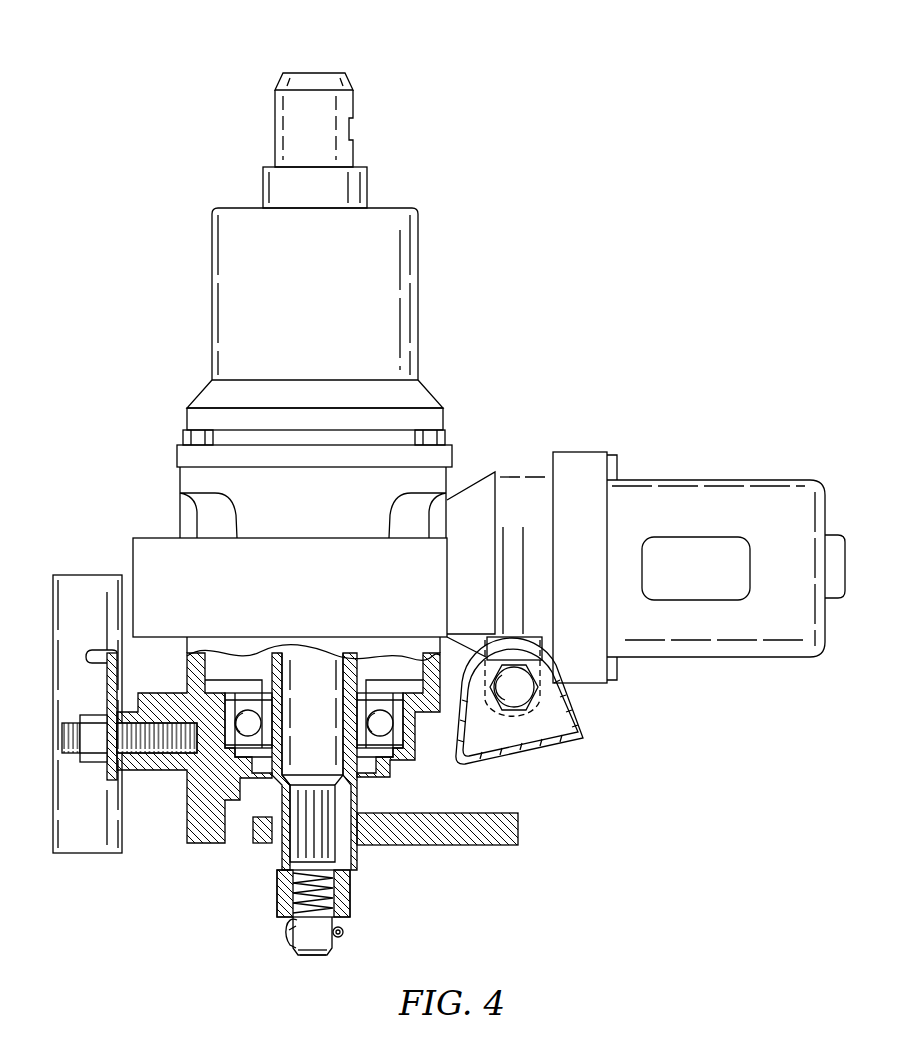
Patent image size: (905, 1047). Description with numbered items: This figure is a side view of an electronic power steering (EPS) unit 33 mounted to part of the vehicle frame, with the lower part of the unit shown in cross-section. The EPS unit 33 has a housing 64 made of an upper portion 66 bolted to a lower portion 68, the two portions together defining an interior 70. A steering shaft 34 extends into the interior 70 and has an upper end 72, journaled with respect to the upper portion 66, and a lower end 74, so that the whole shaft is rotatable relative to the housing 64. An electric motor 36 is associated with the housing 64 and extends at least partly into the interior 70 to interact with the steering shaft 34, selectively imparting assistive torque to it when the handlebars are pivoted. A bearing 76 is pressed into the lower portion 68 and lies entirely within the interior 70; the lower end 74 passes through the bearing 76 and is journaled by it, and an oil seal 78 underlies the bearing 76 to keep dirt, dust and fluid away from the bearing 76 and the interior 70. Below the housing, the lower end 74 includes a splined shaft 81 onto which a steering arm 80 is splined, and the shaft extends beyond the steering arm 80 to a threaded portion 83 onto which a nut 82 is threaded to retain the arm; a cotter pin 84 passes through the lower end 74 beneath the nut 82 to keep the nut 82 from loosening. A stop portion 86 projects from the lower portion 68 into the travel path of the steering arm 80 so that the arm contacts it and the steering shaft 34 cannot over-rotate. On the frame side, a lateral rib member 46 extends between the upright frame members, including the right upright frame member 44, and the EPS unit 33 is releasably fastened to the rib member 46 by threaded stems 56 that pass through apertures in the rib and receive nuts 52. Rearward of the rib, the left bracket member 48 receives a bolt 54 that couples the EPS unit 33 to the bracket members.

The electronic power steering unit 33 is at (496, 356).
The steering shaft 34 is at (270, 126).
The electric motor 36 is at (706, 481).
The right upright frame member 44 is at (86, 843).
The lateral rib member 46 is at (97, 652).
The left bracket member 48 is at (507, 760).
The nut 52 is at (92, 765).
The bolt 54 is at (543, 734).
The threaded stem 56 is at (76, 722).
The housing 64 is at (147, 500).
The upper portion 66 is at (202, 285).
The lower portion 68 is at (165, 845).
The interior 70 is at (240, 676).
The upper end 72 is at (316, 70).
The lower end 74 is at (302, 966).
The bearing 76 is at (362, 697).
The oil seal 78 is at (363, 777).
The steering arm 80 is at (468, 847).
The splined shaft 81 is at (303, 825).
The nut 82 is at (348, 902).
The threaded portion 83 is at (282, 912).
The cotter pin 84 is at (343, 933).
The stop portion 86 is at (207, 833).